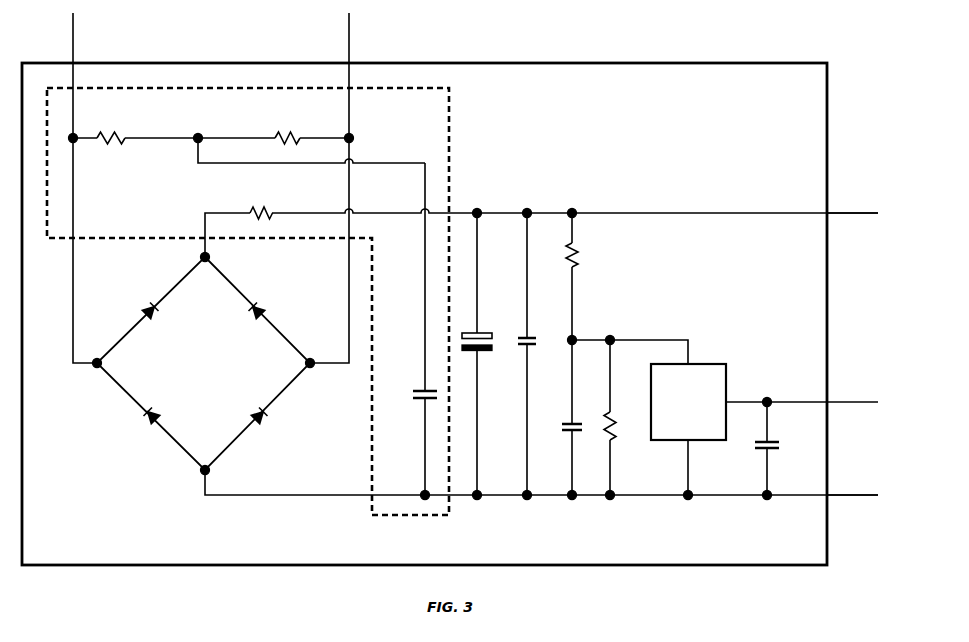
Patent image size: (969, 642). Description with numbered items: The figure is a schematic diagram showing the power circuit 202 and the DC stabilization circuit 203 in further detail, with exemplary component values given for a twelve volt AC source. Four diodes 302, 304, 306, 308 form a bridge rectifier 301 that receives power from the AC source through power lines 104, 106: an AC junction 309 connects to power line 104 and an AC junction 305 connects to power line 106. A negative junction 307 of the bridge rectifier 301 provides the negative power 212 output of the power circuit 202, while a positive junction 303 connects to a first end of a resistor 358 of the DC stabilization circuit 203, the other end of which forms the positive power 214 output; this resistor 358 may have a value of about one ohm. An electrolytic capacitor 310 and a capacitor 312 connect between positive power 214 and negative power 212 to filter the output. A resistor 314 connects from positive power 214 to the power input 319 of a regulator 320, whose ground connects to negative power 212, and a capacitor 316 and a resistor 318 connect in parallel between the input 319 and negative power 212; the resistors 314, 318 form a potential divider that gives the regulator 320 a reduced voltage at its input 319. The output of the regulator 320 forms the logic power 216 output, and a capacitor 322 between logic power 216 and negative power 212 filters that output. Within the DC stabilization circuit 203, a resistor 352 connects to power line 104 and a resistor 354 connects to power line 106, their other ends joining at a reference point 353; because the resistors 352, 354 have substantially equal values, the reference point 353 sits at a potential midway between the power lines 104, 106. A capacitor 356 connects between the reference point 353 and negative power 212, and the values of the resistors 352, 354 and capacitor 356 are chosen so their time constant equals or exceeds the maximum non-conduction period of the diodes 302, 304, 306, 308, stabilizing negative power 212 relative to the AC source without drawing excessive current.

The power line 104 is at (73, 33).
The power line 106 is at (349, 33).
The power circuit 202 is at (424, 314).
The DC stabilization circuit 203 is at (450, 115).
The negative power 212 is at (857, 494).
The positive power 214 is at (855, 212).
The logic power 216 is at (857, 400).
The bridge rectifier 301 is at (462, 374).
The diode 302 is at (145, 303).
The positive junction 303 is at (205, 276).
The diode 304 is at (266, 303).
The AC junction 305 is at (294, 363).
The diode 306 is at (262, 422).
The negative junction 307 is at (205, 452).
The diode 308 is at (152, 422).
The AC junction 309 is at (114, 363).
The electrolytic capacitor 310 is at (487, 330).
The capacitor 312 is at (527, 350).
The resistor 314 is at (570, 270).
The capacitor 316 is at (568, 422).
The resistor 318 is at (614, 412).
The power input 319 is at (660, 338).
The regulator 320 is at (688, 432).
The capacitor 322 is at (760, 448).
The resistor 352 is at (115, 132).
The reference point 353 is at (188, 148).
The resistor 354 is at (287, 132).
The capacitor 356 is at (420, 390).
The resistor 358 is at (258, 207).